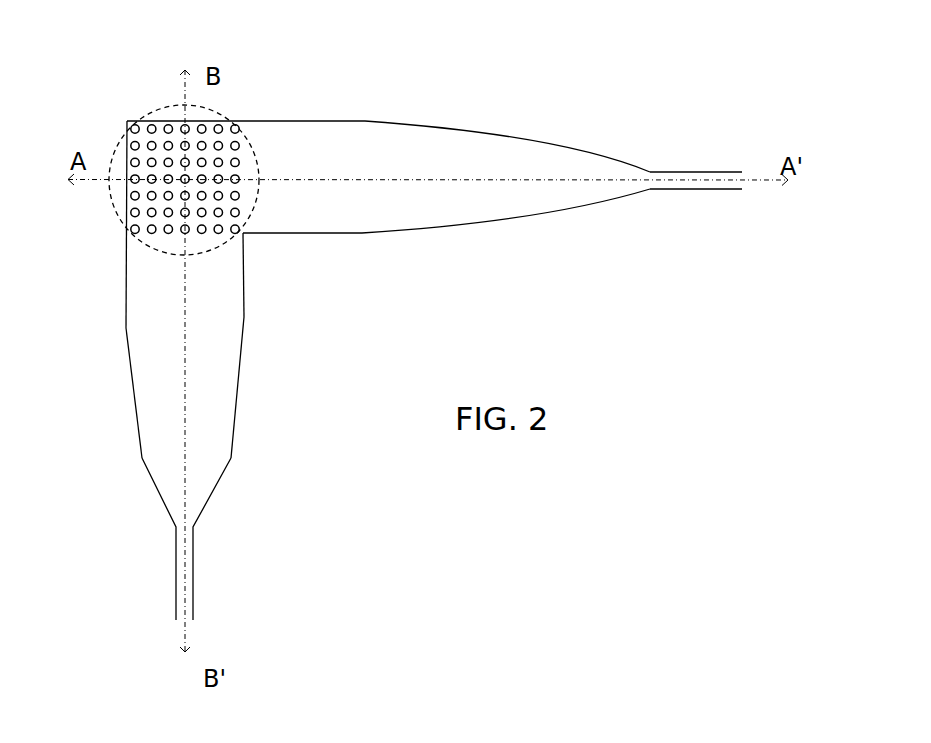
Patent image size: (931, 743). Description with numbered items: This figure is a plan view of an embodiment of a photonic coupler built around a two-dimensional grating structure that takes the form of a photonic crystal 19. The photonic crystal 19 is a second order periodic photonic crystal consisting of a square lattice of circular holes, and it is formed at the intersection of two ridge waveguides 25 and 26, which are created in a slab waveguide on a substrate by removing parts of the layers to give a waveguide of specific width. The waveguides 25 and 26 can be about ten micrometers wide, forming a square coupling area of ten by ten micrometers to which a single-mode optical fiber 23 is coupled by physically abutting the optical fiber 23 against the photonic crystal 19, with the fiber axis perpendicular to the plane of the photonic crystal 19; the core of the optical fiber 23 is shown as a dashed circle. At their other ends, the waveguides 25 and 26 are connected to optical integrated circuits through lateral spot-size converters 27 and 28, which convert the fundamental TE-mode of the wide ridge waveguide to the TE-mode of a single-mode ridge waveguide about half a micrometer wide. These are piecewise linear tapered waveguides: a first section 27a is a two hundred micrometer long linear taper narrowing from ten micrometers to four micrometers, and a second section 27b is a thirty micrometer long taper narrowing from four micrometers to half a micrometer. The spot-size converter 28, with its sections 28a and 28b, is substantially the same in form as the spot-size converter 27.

The photonic crystal 19 is at (160, 147).
The single-mode optical fiber 23 is at (112, 207).
The ridge waveguide 25 is at (246, 177).
The ridge waveguide 26 is at (185, 224).
The lateral spot-size converter 27 is at (552, 147).
The first section 27a is at (506, 177).
The second section 27b is at (643, 182).
The lateral spot-size converter 28 is at (145, 468).
The first section 28a is at (185, 387).
The second section 28b is at (186, 539).